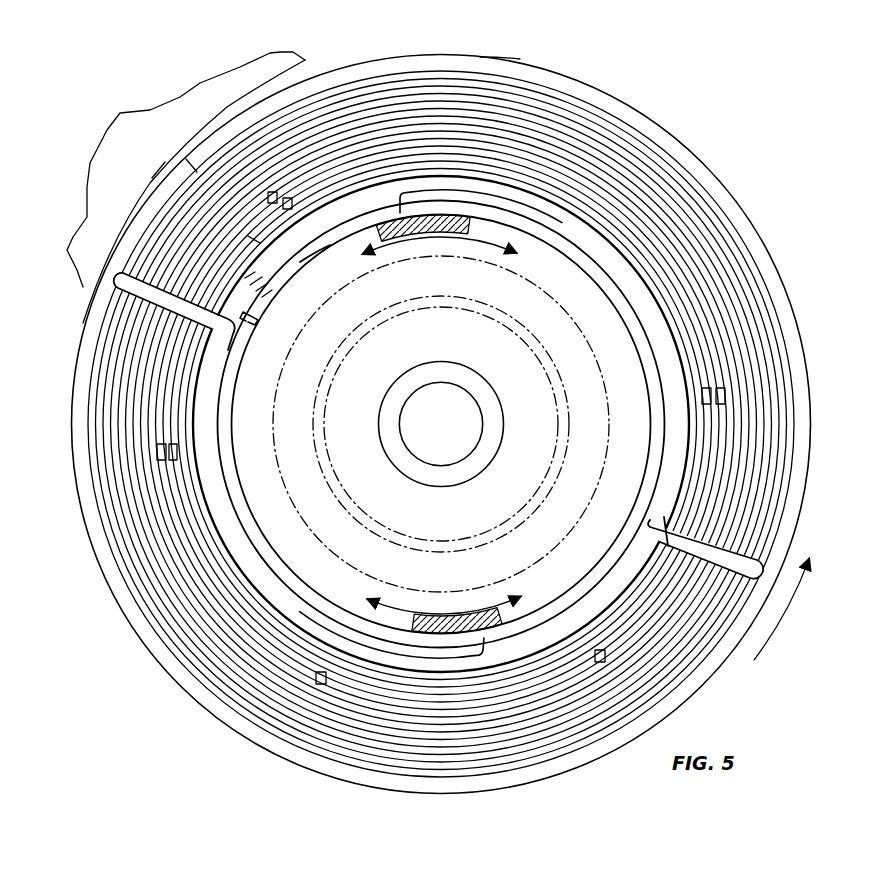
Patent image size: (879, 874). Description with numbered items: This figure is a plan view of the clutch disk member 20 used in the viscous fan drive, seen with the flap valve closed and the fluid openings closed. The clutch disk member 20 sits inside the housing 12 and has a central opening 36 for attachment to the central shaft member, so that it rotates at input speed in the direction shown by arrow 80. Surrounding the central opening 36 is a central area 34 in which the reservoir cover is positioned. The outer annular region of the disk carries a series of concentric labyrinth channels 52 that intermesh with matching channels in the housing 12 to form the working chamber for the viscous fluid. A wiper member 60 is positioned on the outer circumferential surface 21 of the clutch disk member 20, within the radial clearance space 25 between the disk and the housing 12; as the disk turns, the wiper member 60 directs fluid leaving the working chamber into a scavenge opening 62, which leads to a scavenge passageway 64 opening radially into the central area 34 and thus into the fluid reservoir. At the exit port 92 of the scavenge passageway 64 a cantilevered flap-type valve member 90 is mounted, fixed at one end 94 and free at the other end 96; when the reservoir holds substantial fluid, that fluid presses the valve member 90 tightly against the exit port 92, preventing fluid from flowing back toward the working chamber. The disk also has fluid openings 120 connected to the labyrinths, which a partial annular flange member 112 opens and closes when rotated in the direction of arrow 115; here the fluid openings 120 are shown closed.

The housing 12 is at (203, 93).
The clutch disk member 20 is at (652, 133).
The outer circumferential surface 21 is at (462, 57).
The radial clearance space 25 is at (308, 72).
The central area 34 is at (575, 460).
The central opening 36 is at (480, 413).
The labyrinth channels 52 is at (690, 325).
The wiper member 60 is at (173, 157).
The scavenge opening 62 is at (165, 175).
The scavenge passageway 64 is at (253, 237).
The arrow 80 is at (780, 628).
The valve member 90 is at (285, 298).
The exit port 92 is at (283, 273).
The fixed end 94 is at (262, 333).
The free end 96 is at (313, 263).
The partial annular flange member 112 is at (447, 237).
The arrow 115 is at (418, 242).
The fluid openings 120 is at (400, 212).